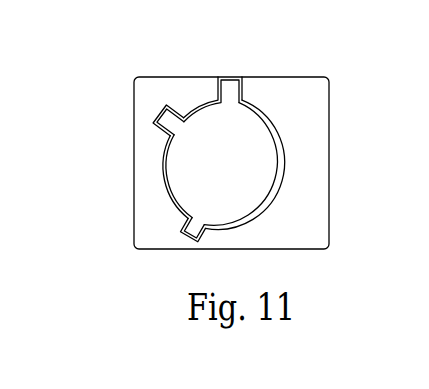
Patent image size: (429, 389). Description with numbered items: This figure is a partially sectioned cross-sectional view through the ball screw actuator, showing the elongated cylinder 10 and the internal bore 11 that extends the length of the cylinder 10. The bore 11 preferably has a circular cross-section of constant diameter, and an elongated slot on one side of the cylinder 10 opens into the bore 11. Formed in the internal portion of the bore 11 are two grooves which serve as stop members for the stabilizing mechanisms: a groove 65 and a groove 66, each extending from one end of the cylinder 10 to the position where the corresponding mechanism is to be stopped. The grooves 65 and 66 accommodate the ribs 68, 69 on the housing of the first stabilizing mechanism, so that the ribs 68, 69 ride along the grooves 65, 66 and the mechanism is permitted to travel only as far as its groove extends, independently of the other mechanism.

The cylinder 10 is at (318, 141).
The internal bore 11 is at (289, 185).
The groove 66 is at (158, 118).
The rib 69 is at (167, 125).
The rib 68 is at (189, 231).
The groove 65 is at (177, 244).